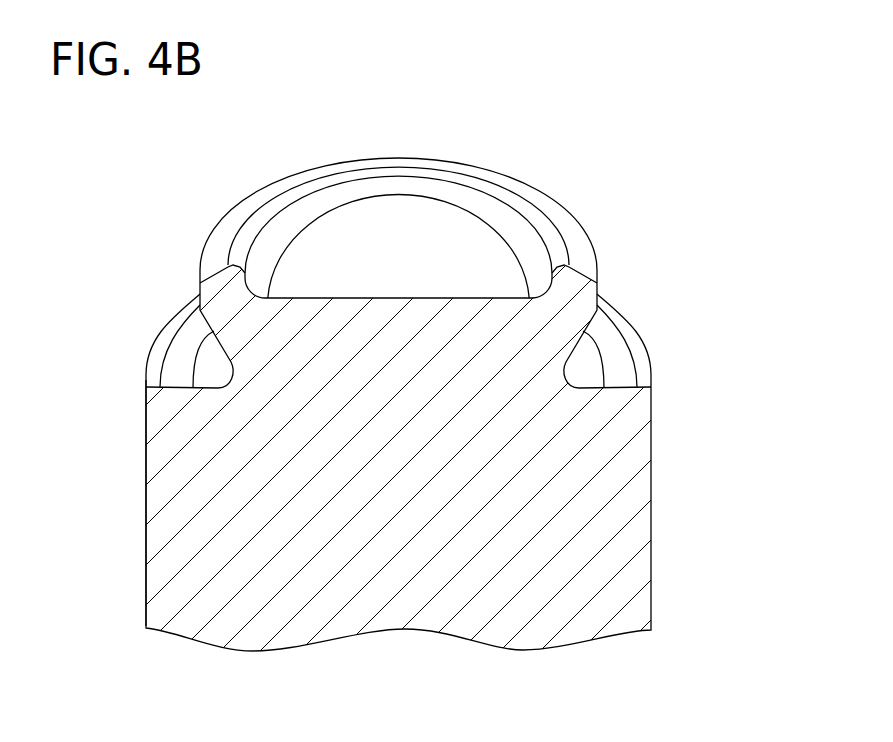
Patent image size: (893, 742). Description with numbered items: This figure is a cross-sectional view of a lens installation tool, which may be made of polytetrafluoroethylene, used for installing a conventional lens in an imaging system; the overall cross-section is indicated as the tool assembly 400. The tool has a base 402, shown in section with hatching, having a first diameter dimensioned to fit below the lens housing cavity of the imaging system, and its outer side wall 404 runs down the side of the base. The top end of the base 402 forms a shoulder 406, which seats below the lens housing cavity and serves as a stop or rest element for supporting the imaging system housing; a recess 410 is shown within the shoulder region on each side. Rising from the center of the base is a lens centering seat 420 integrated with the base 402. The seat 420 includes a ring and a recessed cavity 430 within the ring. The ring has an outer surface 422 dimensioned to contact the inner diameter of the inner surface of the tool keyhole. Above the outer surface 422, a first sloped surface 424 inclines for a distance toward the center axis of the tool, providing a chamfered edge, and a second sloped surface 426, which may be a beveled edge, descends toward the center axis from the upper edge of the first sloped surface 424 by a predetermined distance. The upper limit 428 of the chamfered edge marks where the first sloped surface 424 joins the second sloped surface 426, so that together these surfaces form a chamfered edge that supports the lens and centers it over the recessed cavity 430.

The container closure assembly 400 is at (528, 114).
The base 402 is at (605, 517).
The outer side wall 404 is at (147, 495).
The shoulder 406 is at (651, 378).
The groove void 410 is at (566, 368).
The lens centering seat 420 is at (272, 183).
The outer surface 422 is at (200, 294).
The first sloped surface 424 is at (592, 246).
The second sloped surface 426 is at (537, 222).
The upper limit 428 is at (512, 193).
The recessed cavity 430 is at (392, 268).